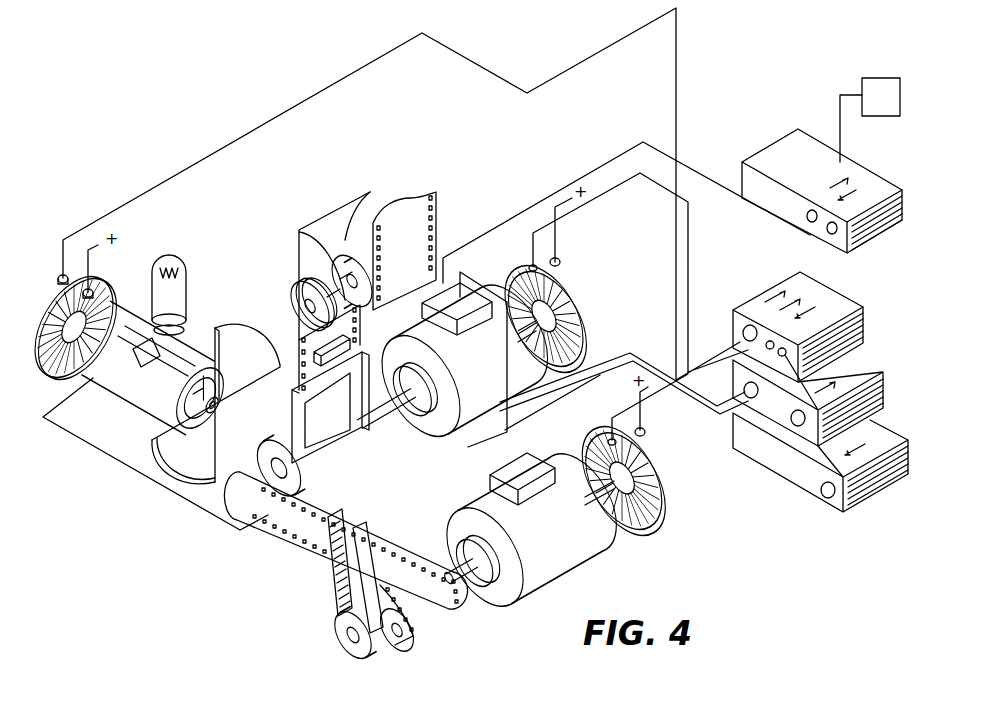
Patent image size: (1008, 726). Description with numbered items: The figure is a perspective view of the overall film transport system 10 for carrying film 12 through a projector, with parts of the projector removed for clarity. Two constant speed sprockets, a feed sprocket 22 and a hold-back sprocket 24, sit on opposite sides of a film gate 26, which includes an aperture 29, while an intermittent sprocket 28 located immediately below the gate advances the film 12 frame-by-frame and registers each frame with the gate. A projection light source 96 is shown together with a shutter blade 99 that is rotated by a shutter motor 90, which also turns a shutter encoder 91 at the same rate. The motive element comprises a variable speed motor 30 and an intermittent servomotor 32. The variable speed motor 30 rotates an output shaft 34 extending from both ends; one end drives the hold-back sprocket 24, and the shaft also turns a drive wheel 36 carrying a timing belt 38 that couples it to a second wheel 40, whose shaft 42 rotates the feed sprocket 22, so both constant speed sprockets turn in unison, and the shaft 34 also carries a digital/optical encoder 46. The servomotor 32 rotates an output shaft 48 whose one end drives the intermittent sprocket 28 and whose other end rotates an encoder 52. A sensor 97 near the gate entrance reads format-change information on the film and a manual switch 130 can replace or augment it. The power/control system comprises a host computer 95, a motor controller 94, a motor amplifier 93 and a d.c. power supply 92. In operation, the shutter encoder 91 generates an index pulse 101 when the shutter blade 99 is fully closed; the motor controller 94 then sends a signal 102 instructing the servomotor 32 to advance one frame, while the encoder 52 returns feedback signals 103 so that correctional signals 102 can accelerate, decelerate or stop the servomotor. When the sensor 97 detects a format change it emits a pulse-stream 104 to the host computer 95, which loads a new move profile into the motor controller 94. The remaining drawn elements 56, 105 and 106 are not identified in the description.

The film transport system 10 is at (128, 138).
The index pulse 101 is at (273, 120).
The feedback signals 103 is at (676, 292).
The pulse-stream 104 is at (538, 206).
The base 106 is at (238, 529).
The shutter encoder 91 is at (47, 312).
The shutter motor 90 is at (118, 452).
The projection light source 96 is at (170, 258).
The shutter blade 99 is at (182, 486).
The feed sprocket 22 is at (340, 212).
The film 12 is at (412, 195).
The perforations 56 is at (452, 200).
The shaft 42 is at (300, 231).
The second wheel 40 is at (290, 294).
The sensor 97 is at (352, 345).
The film gate 26 is at (292, 428).
The output shaft 48 is at (380, 415).
The intermittent sprocket 28 is at (272, 446).
The aperture 29 is at (362, 455).
The timing belt 38 is at (333, 596).
The drive wheel 36 is at (345, 640).
The hold-back sprocket 24 is at (395, 636).
The output shaft 34 is at (462, 585).
The servomotor 32 is at (440, 422).
The encoder 52 is at (523, 272).
The signal 102 is at (575, 386).
The wire 105 is at (568, 404).
The variable speed motor 30 is at (538, 584).
The encoder 46 is at (612, 525).
The host computer 95 is at (892, 232).
The manual switch 130 is at (880, 118).
The motor controller 94 is at (864, 326).
The motor amplifier 93 is at (880, 385).
The d.c. power supply 92 is at (860, 512).